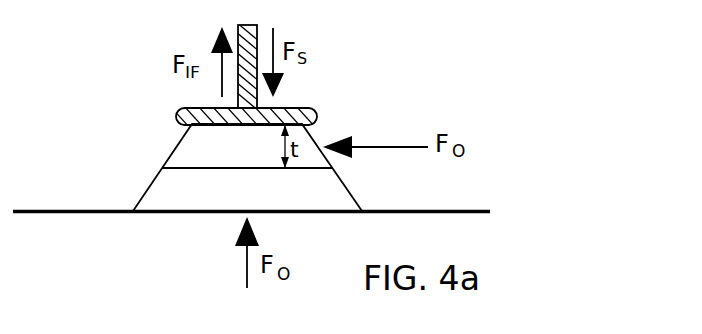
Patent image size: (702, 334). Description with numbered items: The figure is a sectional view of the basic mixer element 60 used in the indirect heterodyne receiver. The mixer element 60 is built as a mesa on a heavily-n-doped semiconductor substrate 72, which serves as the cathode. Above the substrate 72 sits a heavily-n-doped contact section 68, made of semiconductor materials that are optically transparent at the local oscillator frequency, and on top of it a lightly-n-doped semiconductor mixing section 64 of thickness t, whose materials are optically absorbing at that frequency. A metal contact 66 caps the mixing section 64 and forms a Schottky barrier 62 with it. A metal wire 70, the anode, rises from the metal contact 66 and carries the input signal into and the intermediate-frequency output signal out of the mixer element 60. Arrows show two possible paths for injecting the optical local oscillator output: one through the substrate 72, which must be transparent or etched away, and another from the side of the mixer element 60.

The mixer element 60 is at (68, 92).
The Schottky barrier 62 is at (330, 125).
The mixing section 64 is at (200, 147).
The metal contact 66 is at (302, 117).
The contact section 68 is at (325, 192).
The metal wire 70 is at (257, 27).
The semiconductor substrate 72 is at (128, 197).